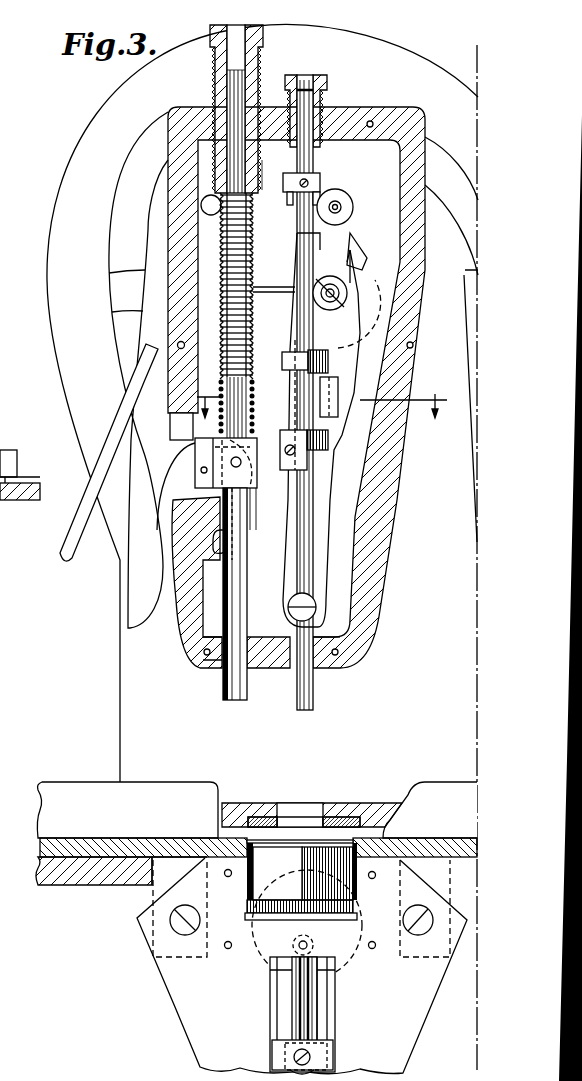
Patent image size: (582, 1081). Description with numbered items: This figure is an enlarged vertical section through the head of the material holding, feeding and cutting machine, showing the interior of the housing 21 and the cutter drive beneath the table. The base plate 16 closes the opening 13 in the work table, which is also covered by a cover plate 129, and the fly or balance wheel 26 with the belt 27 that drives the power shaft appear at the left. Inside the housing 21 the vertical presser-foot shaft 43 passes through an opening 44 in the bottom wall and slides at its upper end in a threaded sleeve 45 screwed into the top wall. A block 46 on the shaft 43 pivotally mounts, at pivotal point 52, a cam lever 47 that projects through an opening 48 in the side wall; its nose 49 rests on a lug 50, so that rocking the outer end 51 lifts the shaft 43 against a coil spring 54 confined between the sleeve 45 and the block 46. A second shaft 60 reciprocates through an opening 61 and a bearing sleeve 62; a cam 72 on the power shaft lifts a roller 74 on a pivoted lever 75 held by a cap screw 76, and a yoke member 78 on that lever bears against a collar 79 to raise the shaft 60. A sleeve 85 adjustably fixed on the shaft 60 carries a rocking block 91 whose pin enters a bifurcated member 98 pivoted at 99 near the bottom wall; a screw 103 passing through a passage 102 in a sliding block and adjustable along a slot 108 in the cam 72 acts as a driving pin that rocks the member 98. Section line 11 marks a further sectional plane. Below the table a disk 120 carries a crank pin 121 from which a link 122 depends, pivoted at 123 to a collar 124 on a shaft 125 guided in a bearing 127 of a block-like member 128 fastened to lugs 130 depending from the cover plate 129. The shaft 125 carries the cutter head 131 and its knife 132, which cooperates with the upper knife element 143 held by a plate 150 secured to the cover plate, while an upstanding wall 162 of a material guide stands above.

The section line 11 is at (321, 395).
The opening 13 is at (147, 880).
The base plate 16 is at (62, 877).
The housing 21 is at (210, 600).
The fly or balance wheel 26 is at (58, 356).
The belt 27 is at (90, 470).
The vertical shaft 43 is at (230, 690).
The opening 44 is at (226, 665).
The threaded sleeve 45 is at (257, 70).
The block 46 is at (252, 482).
The cam lever 47 is at (172, 487).
The opening 48 is at (181, 427).
The nose portion 49 is at (240, 458).
The lug 50 is at (222, 540).
The outer end 51 is at (142, 600).
The pivotal point 52 is at (200, 472).
The coil spring 54 is at (220, 303).
The shaft 60 is at (300, 680).
The opening 61 is at (320, 660).
The bearing sleeve 62 is at (330, 90).
The cam 72 is at (252, 220).
The roller 74 is at (353, 205).
The pivoted lever 75 is at (266, 190).
The bolt or cap screw 76 is at (210, 203).
The yoke member 78 is at (340, 200).
The collar 79 is at (320, 183).
The sleeve 85 is at (298, 390).
The block 91 is at (340, 395).
The bifurcated member 98 is at (330, 510).
The pivotal point 99 is at (318, 607).
The passage 102 is at (268, 803).
The screw 103 is at (345, 290).
The slot 108 is at (373, 300).
The wheel or disk 120 is at (330, 980).
The crank pin 121 is at (318, 945).
The link 122 is at (330, 1003).
The pivotal connection 123 is at (312, 1055).
The collar 124 is at (275, 1050).
The vertically disposed shaft 125 is at (297, 1012).
The bearing 127 is at (285, 915).
The block-like member 128 is at (172, 1007).
The cover plate 129 is at (40, 845).
The lugs 130 is at (158, 943).
The cutter head 131 is at (185, 935).
The cutting knife 132 is at (340, 847).
The knife element 143 is at (337, 800).
The plate 150 is at (243, 803).
The upstanding wall 162 is at (78, 795).